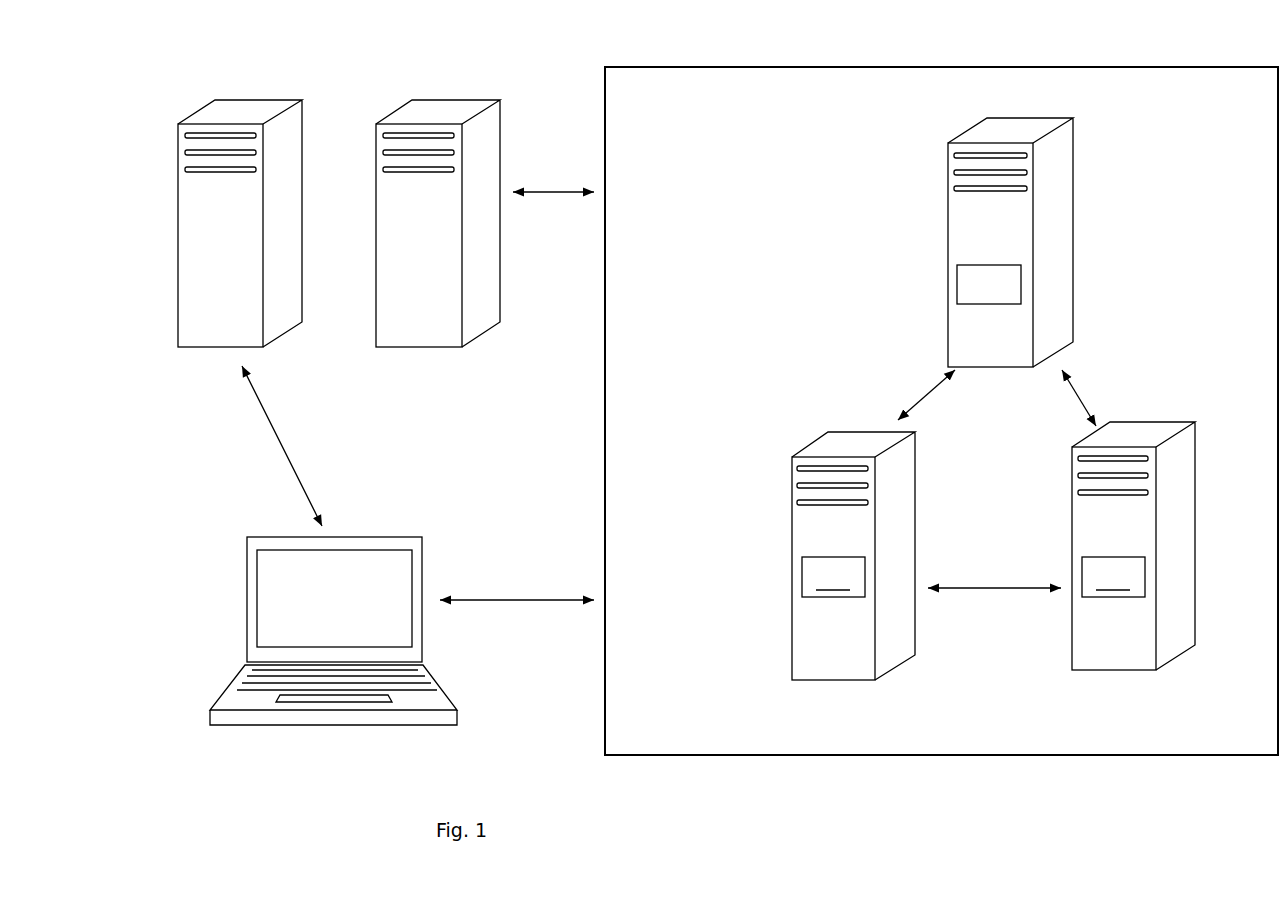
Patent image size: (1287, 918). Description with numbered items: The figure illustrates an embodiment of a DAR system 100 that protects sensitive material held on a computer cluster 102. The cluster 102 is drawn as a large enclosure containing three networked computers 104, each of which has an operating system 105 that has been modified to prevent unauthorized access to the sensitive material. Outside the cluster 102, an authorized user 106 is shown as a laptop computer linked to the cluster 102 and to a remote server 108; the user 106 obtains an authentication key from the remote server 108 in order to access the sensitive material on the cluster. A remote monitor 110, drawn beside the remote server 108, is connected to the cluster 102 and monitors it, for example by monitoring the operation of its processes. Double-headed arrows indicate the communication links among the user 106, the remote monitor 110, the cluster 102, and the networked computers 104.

The DAR system 100 is at (192, 55).
The computer cluster 102 is at (768, 758).
The networked computers 104 is at (949, 399).
The operating system 105 is at (1007, 296).
The authorized user 106 is at (261, 729).
The remote server 108 is at (231, 255).
The remote monitor 110 is at (440, 255).